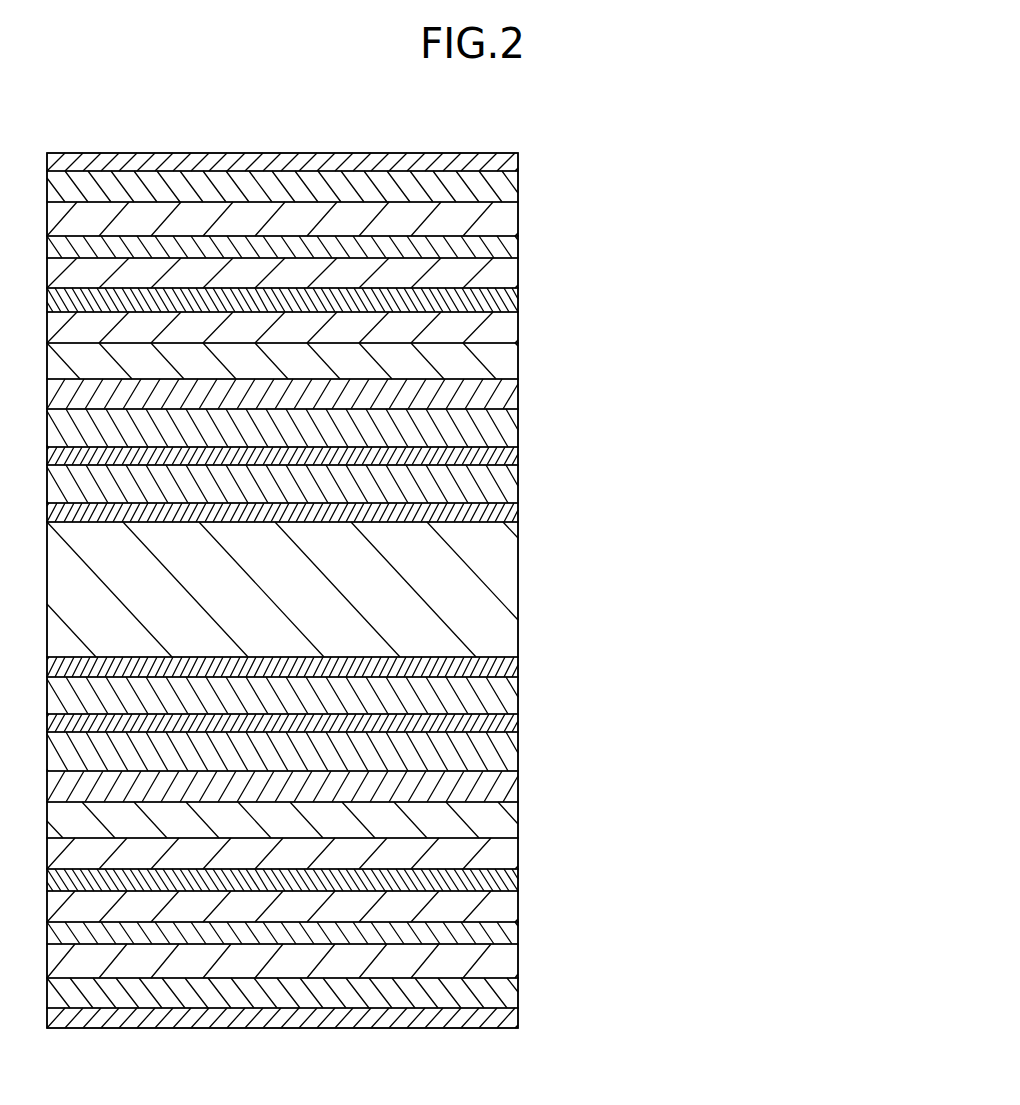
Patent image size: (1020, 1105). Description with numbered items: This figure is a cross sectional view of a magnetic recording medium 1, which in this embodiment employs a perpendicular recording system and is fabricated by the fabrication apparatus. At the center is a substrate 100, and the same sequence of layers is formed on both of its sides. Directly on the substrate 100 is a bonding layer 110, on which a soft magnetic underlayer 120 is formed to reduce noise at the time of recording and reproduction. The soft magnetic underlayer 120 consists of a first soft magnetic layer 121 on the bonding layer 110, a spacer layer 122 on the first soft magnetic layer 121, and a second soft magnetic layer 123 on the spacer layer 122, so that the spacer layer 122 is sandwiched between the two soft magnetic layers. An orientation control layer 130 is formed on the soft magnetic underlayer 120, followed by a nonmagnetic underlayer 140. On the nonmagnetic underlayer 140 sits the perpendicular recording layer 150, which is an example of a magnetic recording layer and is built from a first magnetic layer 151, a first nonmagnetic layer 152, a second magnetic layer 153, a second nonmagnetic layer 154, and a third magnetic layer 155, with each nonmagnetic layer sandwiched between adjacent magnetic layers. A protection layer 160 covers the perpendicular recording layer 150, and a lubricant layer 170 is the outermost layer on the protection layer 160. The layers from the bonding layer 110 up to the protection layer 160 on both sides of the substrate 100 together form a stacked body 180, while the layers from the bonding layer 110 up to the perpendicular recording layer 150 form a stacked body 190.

The magnetic recording medium 1 is at (483, 118).
The substrate 100 is at (505, 588).
The bonding layer 110 is at (507, 513).
The soft magnetic underlayer 120 is at (638, 414).
The first soft magnetic layer 121 is at (507, 485).
The spacer layer 122 is at (507, 458).
The second soft magnetic layer 123 is at (507, 432).
The orientation control layer 130 is at (507, 392).
The nonmagnetic underlayer 140 is at (505, 364).
The perpendicular recording layer 150 is at (638, 201).
The first magnetic layer 151 is at (507, 327).
The first nonmagnetic layer 152 is at (507, 301).
The second magnetic layer 153 is at (507, 274).
The second nonmagnetic layer 154 is at (507, 246).
The third magnetic layer 155 is at (507, 217).
The protection layer 160 is at (520, 183).
The lubricant layer 170 is at (515, 158).
The stacked body 180 is at (727, 167).
The stacked body 190 is at (710, 255).